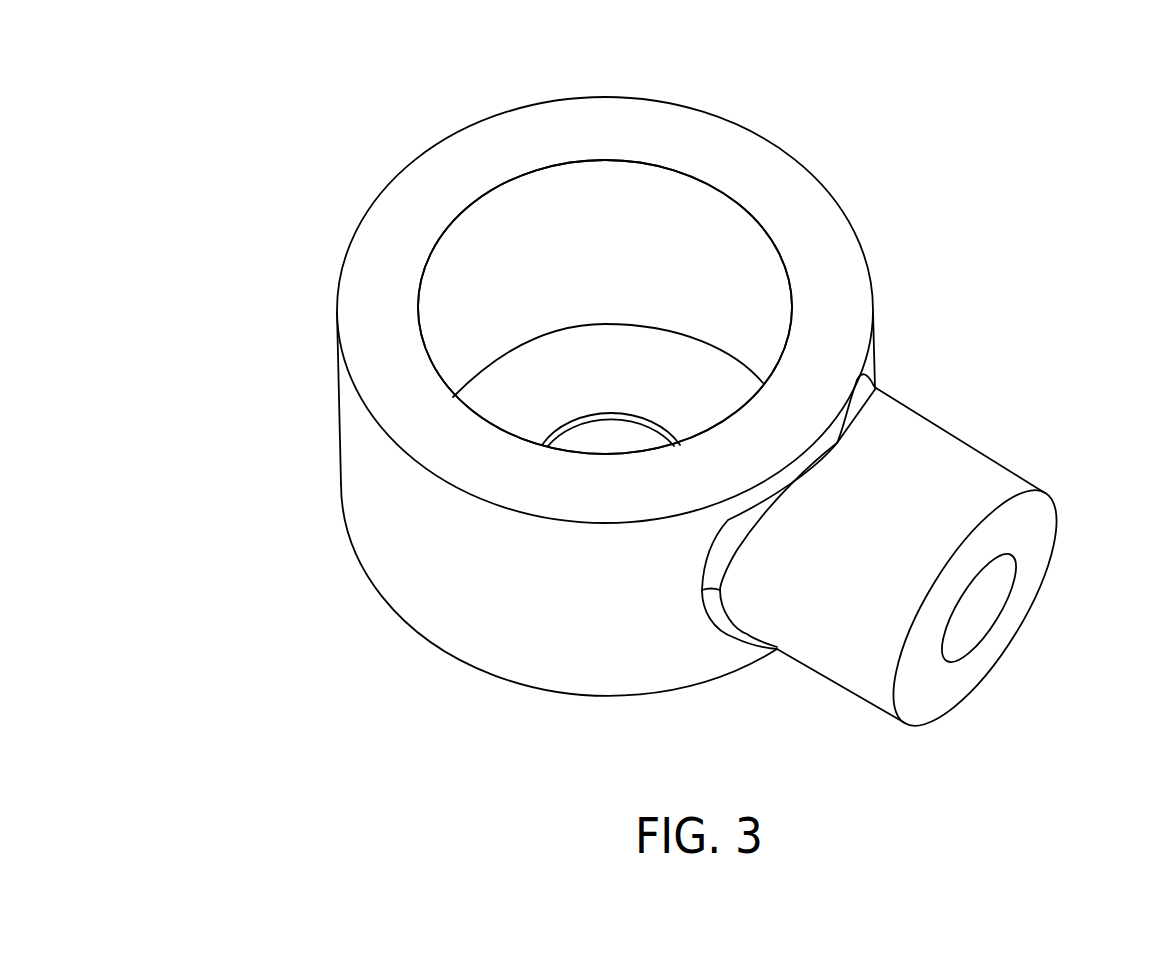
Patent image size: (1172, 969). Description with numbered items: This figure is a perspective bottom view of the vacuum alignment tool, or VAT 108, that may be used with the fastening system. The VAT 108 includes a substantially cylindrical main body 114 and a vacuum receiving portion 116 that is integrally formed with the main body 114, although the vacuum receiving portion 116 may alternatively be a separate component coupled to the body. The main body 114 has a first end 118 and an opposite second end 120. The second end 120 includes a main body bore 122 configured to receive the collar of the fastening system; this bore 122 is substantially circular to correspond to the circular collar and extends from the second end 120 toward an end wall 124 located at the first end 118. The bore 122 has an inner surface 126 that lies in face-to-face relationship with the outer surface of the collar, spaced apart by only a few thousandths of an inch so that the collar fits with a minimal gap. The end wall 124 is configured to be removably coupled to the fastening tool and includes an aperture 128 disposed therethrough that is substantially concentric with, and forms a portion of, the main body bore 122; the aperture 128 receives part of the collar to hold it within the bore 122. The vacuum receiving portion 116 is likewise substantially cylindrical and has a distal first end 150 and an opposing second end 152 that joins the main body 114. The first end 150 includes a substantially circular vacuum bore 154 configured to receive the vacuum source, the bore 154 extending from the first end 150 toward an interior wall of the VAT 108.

The vacuum alignment tool 108 is at (295, 114).
The main body 114 is at (368, 477).
The vacuum receiving portion 116 is at (975, 470).
The first end 118 is at (678, 700).
The second end 120 is at (799, 213).
The main body bore 122 is at (600, 225).
The end wall 124 is at (503, 397).
The inner surface 126 is at (492, 226).
The aperture 128 is at (615, 432).
The distal first end 150 is at (929, 727).
The second end 152 is at (889, 380).
The vacuum bore 154 is at (967, 604).